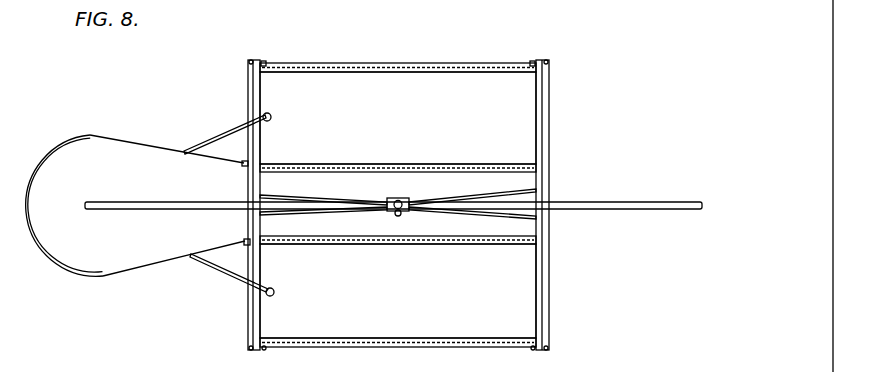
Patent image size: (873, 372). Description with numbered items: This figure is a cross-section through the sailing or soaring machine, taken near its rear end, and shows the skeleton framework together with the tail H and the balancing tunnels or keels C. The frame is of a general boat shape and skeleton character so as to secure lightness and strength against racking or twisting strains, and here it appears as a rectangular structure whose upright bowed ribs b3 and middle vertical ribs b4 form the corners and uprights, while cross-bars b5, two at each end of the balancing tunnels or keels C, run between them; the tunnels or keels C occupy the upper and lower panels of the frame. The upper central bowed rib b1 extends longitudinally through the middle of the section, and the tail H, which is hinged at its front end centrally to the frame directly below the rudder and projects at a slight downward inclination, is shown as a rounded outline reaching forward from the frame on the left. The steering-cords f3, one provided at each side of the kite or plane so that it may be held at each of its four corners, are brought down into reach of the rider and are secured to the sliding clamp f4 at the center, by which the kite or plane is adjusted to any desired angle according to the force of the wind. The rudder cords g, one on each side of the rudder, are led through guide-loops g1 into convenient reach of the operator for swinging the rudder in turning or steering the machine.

The tail H is at (138, 205).
The upper central bowed rib b1 is at (393, 194).
The upright bowed ribs b3 is at (264, 60).
The middle vertical ribs b4 is at (403, 61).
The cross-bars b5 is at (260, 95).
The steering-cords f3 is at (258, 138).
The sliding clamp f4 is at (413, 195).
The cords g is at (222, 134).
The guide-loops g1 is at (272, 120).
The balancing tunnels or keels C is at (398, 205).